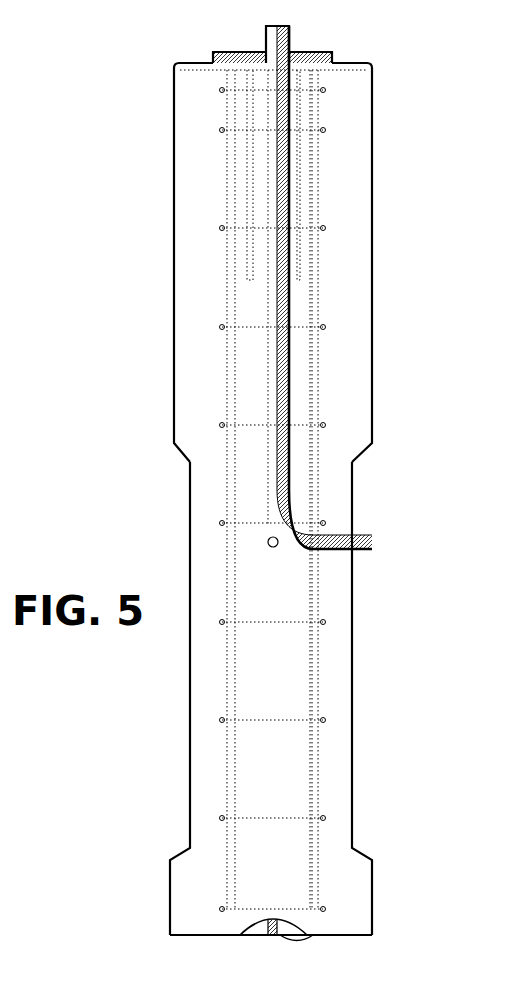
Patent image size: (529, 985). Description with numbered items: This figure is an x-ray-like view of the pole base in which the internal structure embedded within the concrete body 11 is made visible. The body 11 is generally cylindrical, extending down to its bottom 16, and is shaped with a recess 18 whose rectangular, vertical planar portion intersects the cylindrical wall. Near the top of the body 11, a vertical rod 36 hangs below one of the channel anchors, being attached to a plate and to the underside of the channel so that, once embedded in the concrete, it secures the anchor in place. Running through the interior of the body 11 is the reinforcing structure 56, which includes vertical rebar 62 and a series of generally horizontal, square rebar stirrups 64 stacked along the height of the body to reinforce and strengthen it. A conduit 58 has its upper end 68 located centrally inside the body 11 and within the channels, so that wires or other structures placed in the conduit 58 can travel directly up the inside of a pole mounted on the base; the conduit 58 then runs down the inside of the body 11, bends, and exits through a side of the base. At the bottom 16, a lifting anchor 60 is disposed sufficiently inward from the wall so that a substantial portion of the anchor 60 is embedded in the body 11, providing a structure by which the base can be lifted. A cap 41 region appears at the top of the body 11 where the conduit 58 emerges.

The concrete body 11 is at (356, 108).
The bottom 16 is at (213, 936).
The recess 18 is at (352, 795).
The vertical rod 36 is at (247, 167).
The cap 41 is at (240, 52).
The reinforcing structure 56 is at (317, 288).
The conduit 58 is at (268, 543).
The lifting anchor 60 is at (343, 934).
The vertical rebar 62 is at (228, 355).
The rebar stirrup 64 is at (305, 228).
The upper end of conduit 68 is at (289, 40).